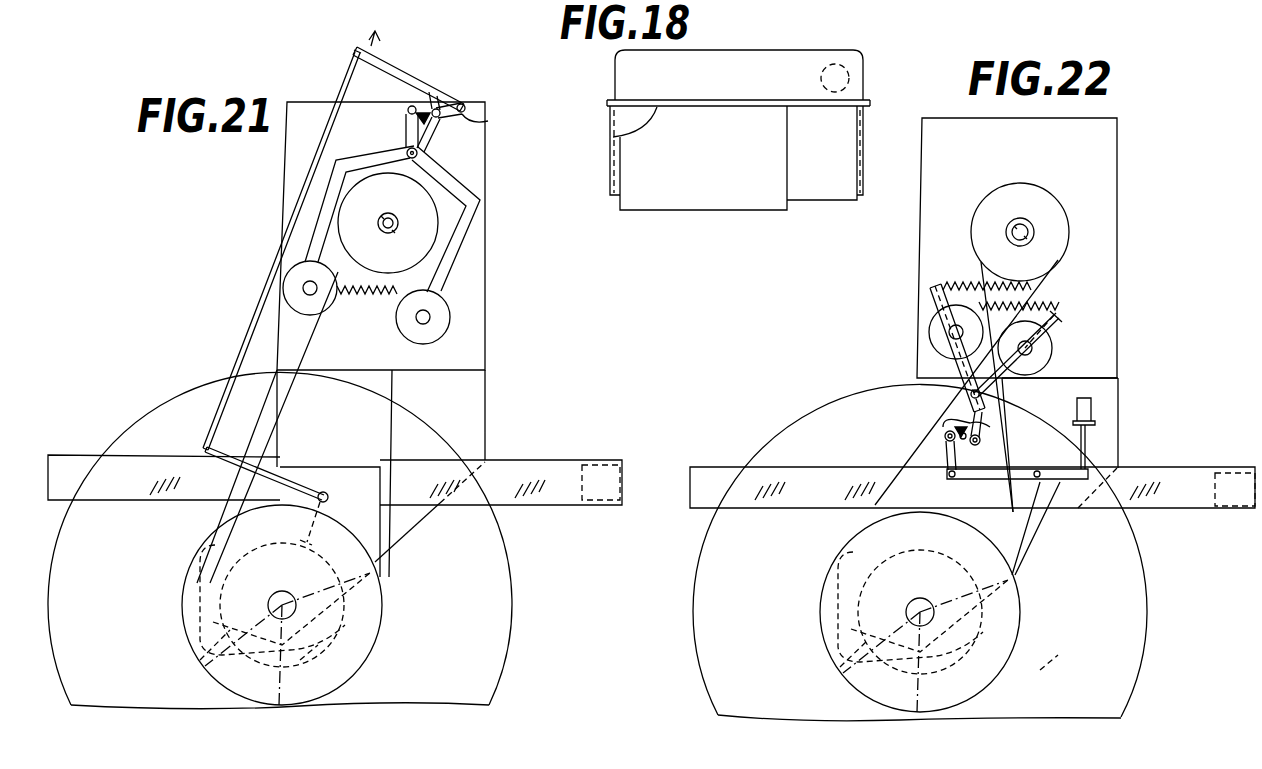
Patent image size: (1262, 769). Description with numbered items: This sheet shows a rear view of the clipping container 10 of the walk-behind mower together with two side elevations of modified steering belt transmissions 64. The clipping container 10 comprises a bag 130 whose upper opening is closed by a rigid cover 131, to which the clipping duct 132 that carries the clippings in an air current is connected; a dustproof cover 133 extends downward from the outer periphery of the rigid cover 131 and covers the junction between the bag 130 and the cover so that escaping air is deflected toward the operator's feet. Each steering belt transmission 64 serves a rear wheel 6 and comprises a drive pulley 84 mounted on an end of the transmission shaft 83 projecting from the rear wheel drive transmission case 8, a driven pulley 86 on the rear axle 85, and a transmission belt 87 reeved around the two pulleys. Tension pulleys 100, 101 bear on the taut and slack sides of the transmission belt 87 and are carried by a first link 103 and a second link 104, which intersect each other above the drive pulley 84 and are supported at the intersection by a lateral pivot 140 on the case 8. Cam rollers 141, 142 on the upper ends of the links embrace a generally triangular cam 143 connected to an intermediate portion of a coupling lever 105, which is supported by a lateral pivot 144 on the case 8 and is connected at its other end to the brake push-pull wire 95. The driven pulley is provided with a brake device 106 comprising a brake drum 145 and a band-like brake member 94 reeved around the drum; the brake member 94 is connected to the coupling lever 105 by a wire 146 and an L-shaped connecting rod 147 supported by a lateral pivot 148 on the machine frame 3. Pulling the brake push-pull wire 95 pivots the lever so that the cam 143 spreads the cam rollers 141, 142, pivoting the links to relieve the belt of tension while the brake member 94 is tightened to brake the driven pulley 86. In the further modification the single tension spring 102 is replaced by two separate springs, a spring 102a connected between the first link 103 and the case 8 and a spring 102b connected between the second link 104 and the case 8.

In FIG. 21, the machine frame 3 is at (549, 464).
In FIG. 22, the machine frame 3 is at (1168, 466).
In FIG. 21, the rear wheel 6 is at (512, 602).
In FIG. 22, the rear wheel 6 is at (1140, 633).
In FIG. 22, the rear wheel drive transmission case 8 is at (1108, 164).
In FIG. 18, the clipping container 10 is at (780, 50).
In FIG. 21, the steering belt transmission 64 is at (400, 362).
In FIG. 22, the steering belt transmission 64 is at (1000, 188).
In FIG. 21, the transmission shaft 83 is at (388, 213).
In FIG. 22, the transmission shaft 83 is at (1026, 226).
In FIG. 21, the drive pulley 84 is at (430, 220).
In FIG. 22, the drive pulley 84 is at (1060, 228).
In FIG. 21, the rear axle 85 is at (284, 593).
In FIG. 22, the rear axle 85 is at (923, 600).
In FIG. 21, the driven pulley 86 is at (376, 622).
In FIG. 22, the driven pulley 86 is at (1012, 648).
In FIG. 21, the transmission belt 87 is at (386, 400).
In FIG. 22, the transmission belt 87 is at (930, 442).
In FIG. 21, the brake member 94 is at (200, 660).
In FIG. 22, the brake member 94 is at (858, 677).
In FIG. 21, the brake push-pull wire 95 is at (373, 45).
In FIG. 22, the brake push-pull wire 95 is at (1090, 445).
In FIG. 21, the tension pulley 100 is at (283, 290).
In FIG. 22, the tension pulley 100 is at (940, 333).
In FIG. 21, the tension pulley 101 is at (450, 320).
In FIG. 22, the tension pulley 101 is at (1052, 352).
In FIG. 21, the tension spring 102 is at (358, 306).
In FIG. 22, the spring 102a is at (966, 284).
In FIG. 22, the spring 102b is at (1040, 306).
In FIG. 21, the first link 103 is at (313, 240).
In FIG. 22, the first link 103 is at (950, 345).
In FIG. 21, the second link 104 is at (436, 268).
In FIG. 22, the second link 104 is at (996, 387).
In FIG. 21, the coupling lever 105 is at (418, 83).
In FIG. 22, the coupling lever 105 is at (985, 481).
In FIG. 21, the brake device 106 is at (280, 700).
In FIG. 22, the brake device 106 is at (1028, 678).
In FIG. 18, the bag 130 is at (678, 202).
In FIG. 18, the rigid cover 131 is at (718, 60).
In FIG. 18, the clipping duct 132 is at (850, 77).
In FIG. 18, the dustproof cover 133 is at (830, 194).
In FIG. 21, the lateral pivot 140 is at (430, 154).
In FIG. 22, the lateral pivot 140 is at (986, 400).
In FIG. 21, the cam roller 141 is at (466, 116).
In FIG. 22, the cam roller 141 is at (966, 441).
In FIG. 21, the cam roller 142 is at (409, 106).
In FIG. 22, the cam roller 142 is at (948, 445).
In FIG. 21, the cam 143 is at (430, 103).
In FIG. 22, the cam 143 is at (982, 408).
In FIG. 21, the lateral pivot 144 is at (466, 104).
In FIG. 22, the lateral pivot 144 is at (1040, 481).
In FIG. 21, the brake drum 145 is at (245, 590).
In FIG. 22, the brake drum 145 is at (855, 640).
In FIG. 21, the brake wire 146 is at (240, 357).
In FIG. 22, the brake wire 146 is at (1025, 560).
In FIG. 21, the L-shaped connecting rod 147 is at (312, 482).
In FIG. 21, the lateral pivot 148 is at (329, 496).